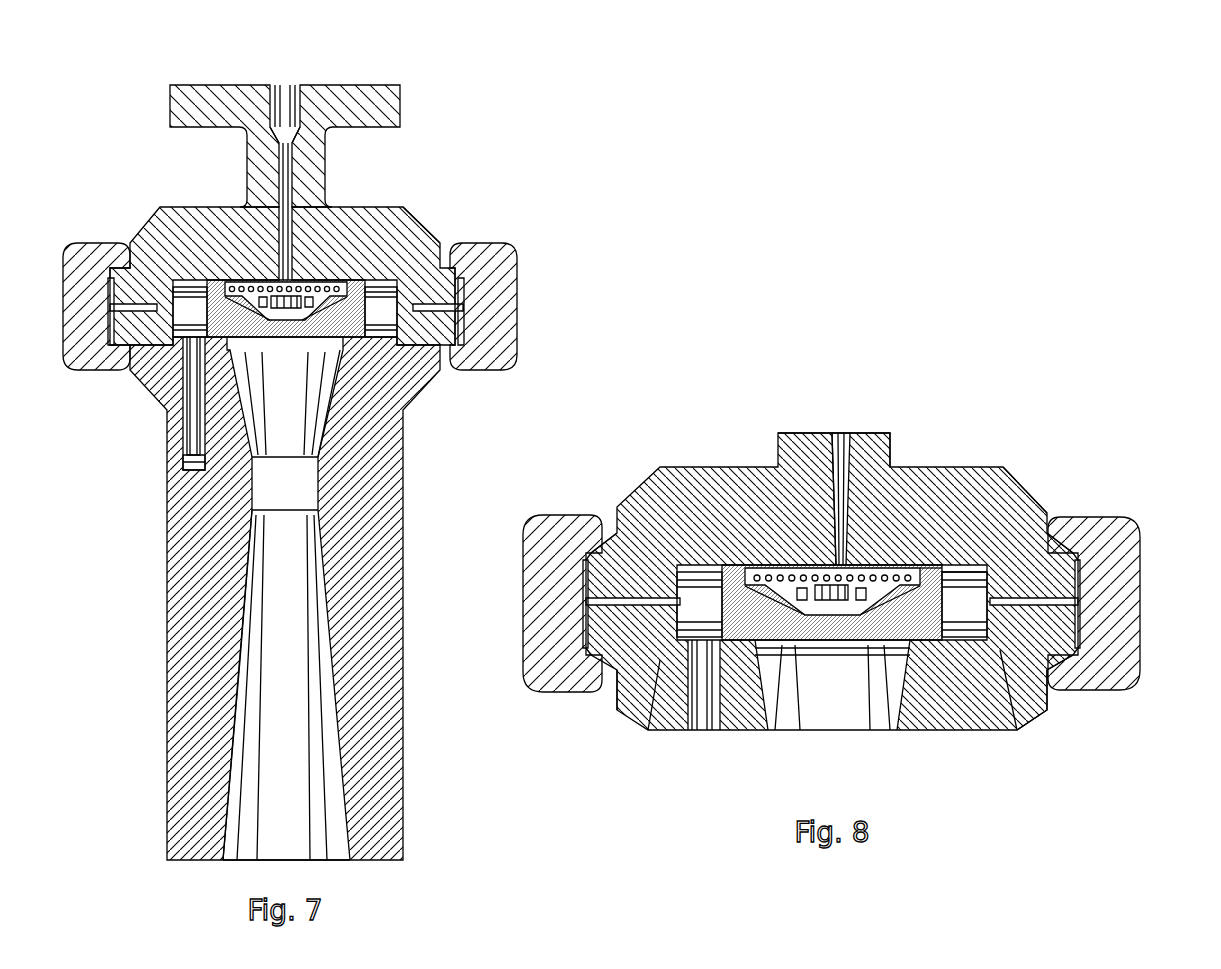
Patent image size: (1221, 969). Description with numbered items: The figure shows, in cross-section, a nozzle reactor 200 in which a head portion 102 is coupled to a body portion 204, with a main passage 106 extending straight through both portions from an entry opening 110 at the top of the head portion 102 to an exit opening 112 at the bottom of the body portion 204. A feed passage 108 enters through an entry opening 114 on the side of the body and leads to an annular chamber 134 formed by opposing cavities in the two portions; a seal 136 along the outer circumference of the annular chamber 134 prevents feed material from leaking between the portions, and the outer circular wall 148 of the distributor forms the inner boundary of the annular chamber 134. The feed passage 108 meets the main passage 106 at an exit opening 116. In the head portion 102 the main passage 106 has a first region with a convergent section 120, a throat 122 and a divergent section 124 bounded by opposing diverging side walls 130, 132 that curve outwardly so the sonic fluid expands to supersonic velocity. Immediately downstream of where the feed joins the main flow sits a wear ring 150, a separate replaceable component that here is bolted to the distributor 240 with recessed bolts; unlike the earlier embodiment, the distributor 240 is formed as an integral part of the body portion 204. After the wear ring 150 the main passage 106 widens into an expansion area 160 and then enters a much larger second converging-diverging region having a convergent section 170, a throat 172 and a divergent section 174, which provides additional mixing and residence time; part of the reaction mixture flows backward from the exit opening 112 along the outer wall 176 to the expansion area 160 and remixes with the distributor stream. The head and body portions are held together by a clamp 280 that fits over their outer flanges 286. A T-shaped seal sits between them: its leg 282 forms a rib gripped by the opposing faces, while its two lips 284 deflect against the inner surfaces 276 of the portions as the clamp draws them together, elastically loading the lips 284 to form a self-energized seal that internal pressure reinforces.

In FIG. 7, the head portion 102 is at (402, 212).
In FIG. 8, the head portion 102 is at (1003, 483).
In FIG. 7, the main passage 106 is at (288, 226).
In FIG. 8, the main passage 106 is at (840, 435).
In FIG. 7, the feed passage 108 is at (186, 437).
In FIG. 8, the feed passage 108 is at (705, 720).
In FIG. 7, the entry opening 110 is at (289, 85).
In FIG. 7, the exit opening 112 is at (232, 855).
In FIG. 7, the entry opening 114 is at (180, 470).
In FIG. 8, the exit opening 116 is at (928, 566).
In FIG. 7, the convergent section 120 is at (325, 136).
In FIG. 7, the throat 122 is at (275, 147).
In FIG. 7, the divergent section 124 is at (273, 232).
In FIG. 8, the diverging side wall 130 is at (770, 462).
In FIG. 8, the diverging side wall 132 is at (878, 567).
In FIG. 7, the annular chamber 134 is at (440, 250).
In FIG. 8, the annular chamber 134 is at (1053, 553).
In FIG. 7, the seal 136 is at (128, 243).
In FIG. 8, the seal 136 is at (640, 467).
In FIG. 8, the outer circular wall 148 is at (980, 572).
In FIG. 7, the wear ring 150 is at (286, 303).
In FIG. 8, the wear ring 150 is at (848, 640).
In FIG. 7, the expansion area 160 is at (343, 333).
In FIG. 8, the expansion area 160 is at (803, 640).
In FIG. 7, the convergent section 170 is at (322, 423).
In FIG. 7, the throat 172 is at (318, 490).
In FIG. 7, the divergent section 174 is at (250, 662).
In FIG. 7, the outer wall 176 is at (226, 756).
In FIG. 7, the nozzle reactor 200 is at (455, 133).
In FIG. 7, the body portion 204 is at (403, 583).
In FIG. 8, the body portion 204 is at (1017, 703).
In FIG. 7, the distributor 240 is at (250, 282).
In FIG. 8, the distributor 240 is at (917, 642).
In FIG. 8, the inner surfaces 276 is at (617, 507).
In FIG. 7, the clamp 280 is at (510, 260).
In FIG. 8, the clamp 280 is at (1140, 540).
In FIG. 8, the leg 282 is at (630, 700).
In FIG. 8, the lips 284 is at (960, 635).
In FIG. 8, the outer flanges 286 is at (1062, 538).